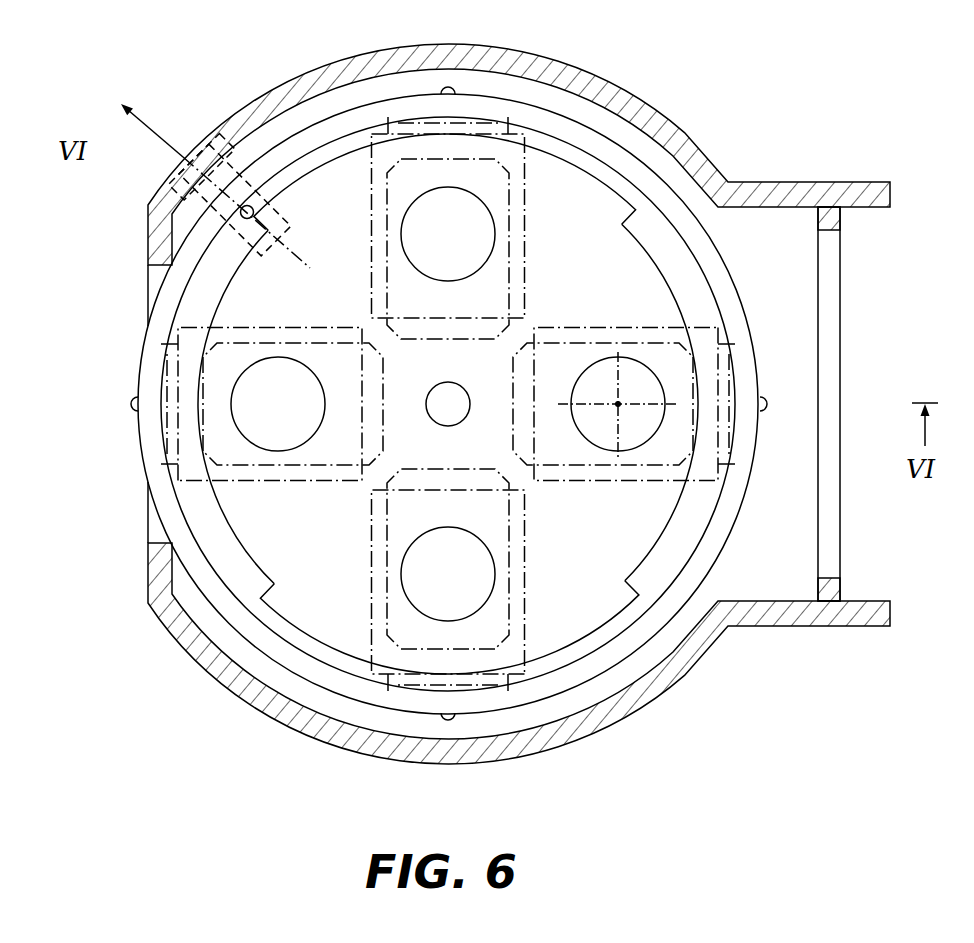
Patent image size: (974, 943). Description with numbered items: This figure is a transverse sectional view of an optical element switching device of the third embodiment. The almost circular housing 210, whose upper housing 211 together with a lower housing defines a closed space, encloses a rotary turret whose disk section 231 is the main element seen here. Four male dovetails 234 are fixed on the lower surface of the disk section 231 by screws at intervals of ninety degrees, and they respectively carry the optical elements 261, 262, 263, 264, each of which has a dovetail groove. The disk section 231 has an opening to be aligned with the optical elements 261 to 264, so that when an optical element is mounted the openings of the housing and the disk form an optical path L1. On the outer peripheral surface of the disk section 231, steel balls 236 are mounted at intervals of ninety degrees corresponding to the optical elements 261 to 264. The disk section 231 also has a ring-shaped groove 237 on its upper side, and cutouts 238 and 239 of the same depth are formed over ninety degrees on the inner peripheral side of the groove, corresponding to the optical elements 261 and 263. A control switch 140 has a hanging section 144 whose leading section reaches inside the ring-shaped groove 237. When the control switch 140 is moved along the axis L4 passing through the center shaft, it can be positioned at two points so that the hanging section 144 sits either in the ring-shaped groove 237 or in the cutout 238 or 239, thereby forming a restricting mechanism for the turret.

The housing 210 is at (668, 117).
The upper housing 211 is at (784, 627).
The disk section 231 is at (280, 652).
The male dovetail 234 is at (487, 304).
The steel ball 236 is at (449, 87).
The ring-shaped groove 237 is at (243, 591).
The cutout 238 is at (637, 240).
The cutout 239 is at (214, 497).
The optical element 261 is at (550, 478).
The optical element 262 is at (520, 207).
The optical element 263 is at (272, 329).
The optical element 264 is at (372, 550).
The control switch 140 is at (228, 165).
The hanging section 144 is at (243, 222).
The optical path L1 is at (618, 404).
The axis L4 is at (300, 255).